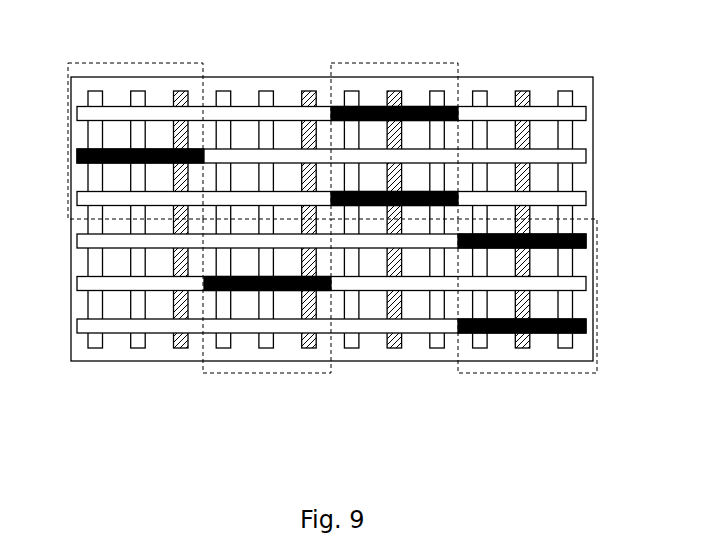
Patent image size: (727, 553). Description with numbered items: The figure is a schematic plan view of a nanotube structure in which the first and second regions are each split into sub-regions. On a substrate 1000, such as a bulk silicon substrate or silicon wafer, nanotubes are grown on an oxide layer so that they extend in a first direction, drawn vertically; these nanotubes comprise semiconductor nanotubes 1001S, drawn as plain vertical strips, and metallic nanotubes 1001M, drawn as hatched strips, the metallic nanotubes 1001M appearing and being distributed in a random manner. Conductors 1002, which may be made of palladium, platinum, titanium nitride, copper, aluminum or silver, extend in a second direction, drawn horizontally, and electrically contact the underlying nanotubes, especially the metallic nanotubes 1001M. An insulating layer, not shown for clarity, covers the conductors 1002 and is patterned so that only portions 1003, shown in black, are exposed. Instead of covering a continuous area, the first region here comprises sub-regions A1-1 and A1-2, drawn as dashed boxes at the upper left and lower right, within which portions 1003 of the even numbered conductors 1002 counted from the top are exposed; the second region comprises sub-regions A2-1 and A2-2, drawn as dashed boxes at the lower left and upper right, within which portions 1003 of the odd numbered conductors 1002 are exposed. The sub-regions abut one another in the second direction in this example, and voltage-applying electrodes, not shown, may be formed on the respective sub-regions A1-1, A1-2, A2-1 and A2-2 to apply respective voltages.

The substrate 1000 is at (588, 344).
The metallic nanotubes 1001M is at (180, 95).
The semiconductor nanotubes 1001S is at (565, 88).
The conductors 1002 is at (587, 197).
The exposed portions of conductors 1003 is at (583, 278).
The sub-region of first region A1-1 is at (68, 222).
The sub-region of first region A1-2 is at (528, 373).
The sub-region of second region A2-1 is at (268, 373).
The sub-region of second region A2-2 is at (458, 62).